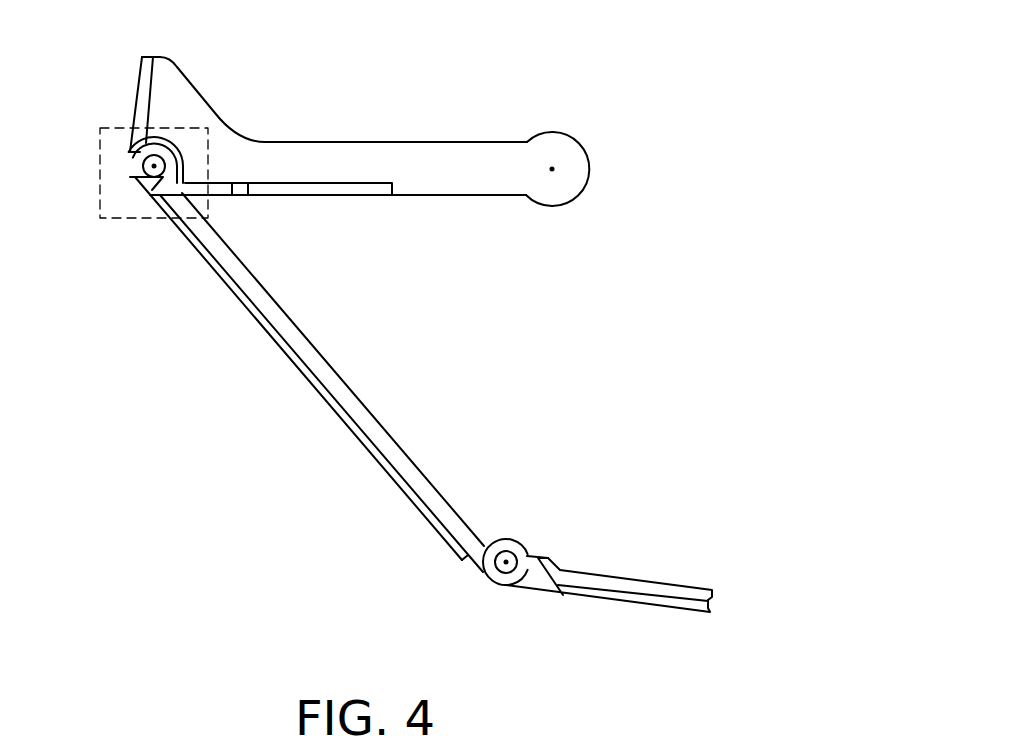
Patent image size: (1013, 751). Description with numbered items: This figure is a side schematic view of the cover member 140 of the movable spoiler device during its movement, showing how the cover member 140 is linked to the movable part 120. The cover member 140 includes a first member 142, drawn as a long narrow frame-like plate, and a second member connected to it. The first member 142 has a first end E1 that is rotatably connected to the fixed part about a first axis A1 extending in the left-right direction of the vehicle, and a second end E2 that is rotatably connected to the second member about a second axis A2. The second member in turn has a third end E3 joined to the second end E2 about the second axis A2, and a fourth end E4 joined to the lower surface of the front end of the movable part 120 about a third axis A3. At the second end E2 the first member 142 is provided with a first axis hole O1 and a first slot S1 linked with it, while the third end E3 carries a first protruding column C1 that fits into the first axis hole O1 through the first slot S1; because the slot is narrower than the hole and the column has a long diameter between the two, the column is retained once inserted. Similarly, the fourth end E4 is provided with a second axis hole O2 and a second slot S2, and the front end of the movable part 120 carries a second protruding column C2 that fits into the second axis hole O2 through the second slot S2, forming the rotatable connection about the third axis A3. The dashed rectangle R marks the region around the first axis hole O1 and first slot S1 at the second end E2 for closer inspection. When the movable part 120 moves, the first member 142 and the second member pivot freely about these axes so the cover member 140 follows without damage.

The cover member 140 is at (600, 48).
The first member 142 is at (402, 160).
The movable part 120 is at (645, 602).
The first end E1 is at (522, 158).
The second end E2 is at (182, 110).
The third end E3 is at (199, 252).
The fourth end E4 is at (456, 548).
The first axis A1 is at (568, 165).
The second axis A2 is at (142, 152).
The third axis A3 is at (517, 584).
The first protruding column C1 is at (166, 162).
The second protruding column C2 is at (507, 552).
The first axis hole O1 is at (163, 180).
The second axis hole O2 is at (488, 572).
The first slot S1 is at (128, 165).
The second slot S2 is at (530, 582).
The region R is at (97, 196).